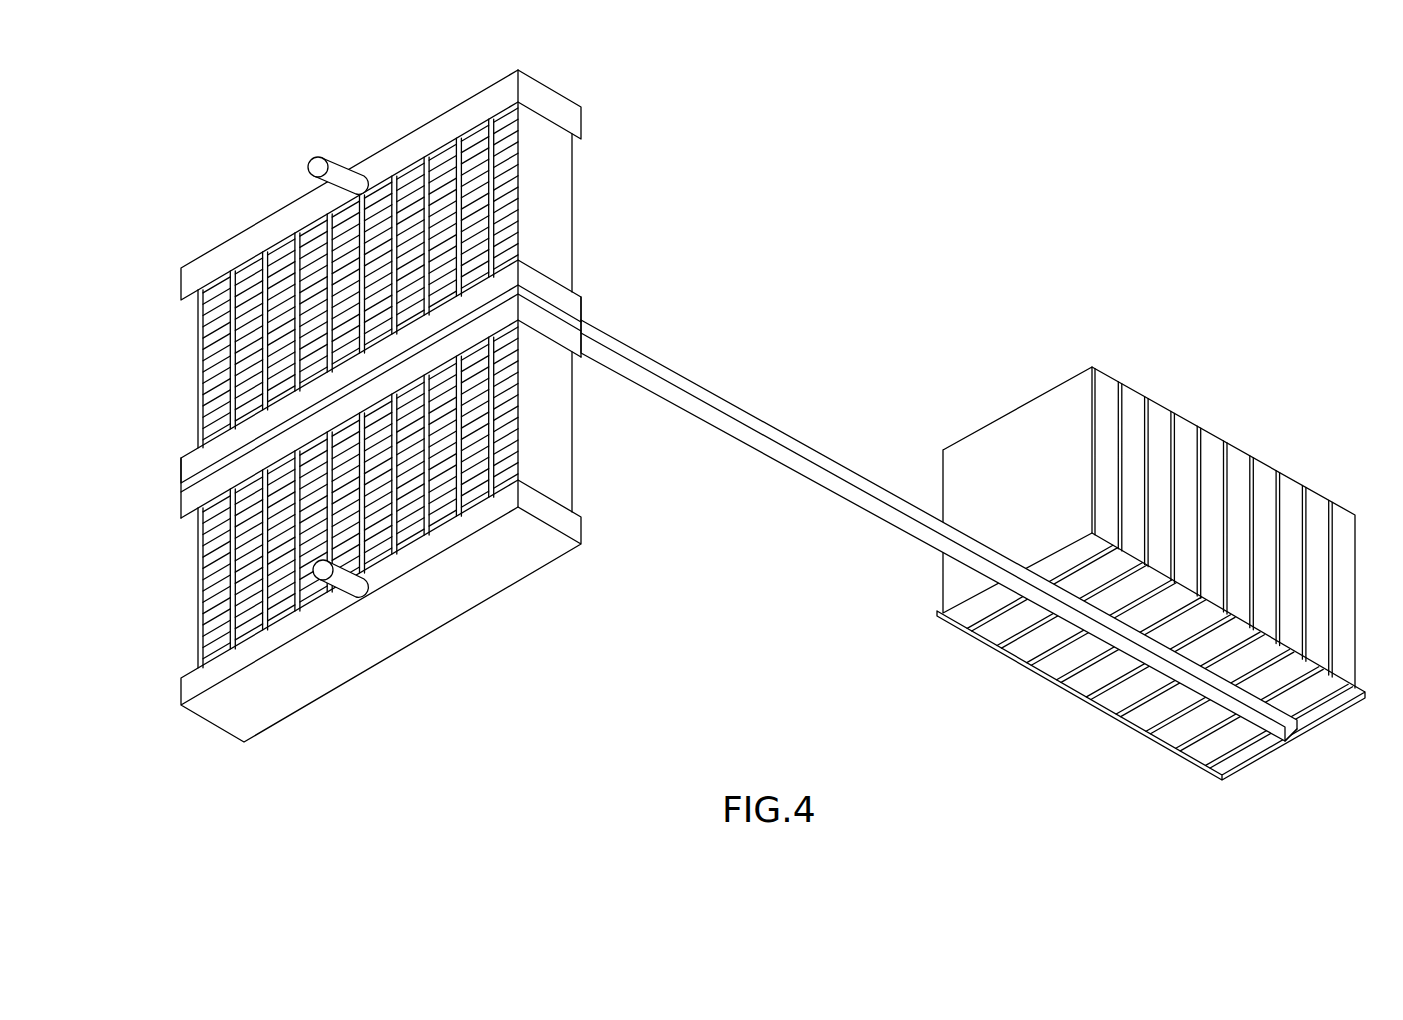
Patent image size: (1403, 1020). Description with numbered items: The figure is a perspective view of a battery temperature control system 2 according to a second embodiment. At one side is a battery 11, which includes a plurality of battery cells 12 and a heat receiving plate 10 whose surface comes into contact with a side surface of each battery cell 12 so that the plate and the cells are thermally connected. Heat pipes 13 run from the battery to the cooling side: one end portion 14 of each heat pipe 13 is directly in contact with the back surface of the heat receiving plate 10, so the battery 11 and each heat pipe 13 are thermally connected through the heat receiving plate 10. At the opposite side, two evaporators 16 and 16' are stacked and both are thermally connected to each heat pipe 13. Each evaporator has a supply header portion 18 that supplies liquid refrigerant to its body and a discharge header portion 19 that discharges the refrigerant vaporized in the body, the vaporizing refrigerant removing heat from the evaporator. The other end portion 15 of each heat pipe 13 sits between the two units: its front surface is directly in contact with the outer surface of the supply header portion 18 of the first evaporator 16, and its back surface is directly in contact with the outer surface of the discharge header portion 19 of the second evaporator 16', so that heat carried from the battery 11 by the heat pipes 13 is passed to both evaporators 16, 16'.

The battery temperature control system 2 is at (788, 425).
The heat receiving plate 10 is at (1166, 529).
The battery 11 is at (1233, 478).
The battery cell 12 is at (1343, 522).
The heat pipe 13 is at (841, 489).
The one end portion 14 is at (1151, 666).
The other end portion 15 is at (582, 323).
The evaporator 16 is at (447, 278).
The second evaporator 16' is at (442, 497).
The supply header portion 18 is at (577, 292).
The discharge header portion 19 is at (576, 120).